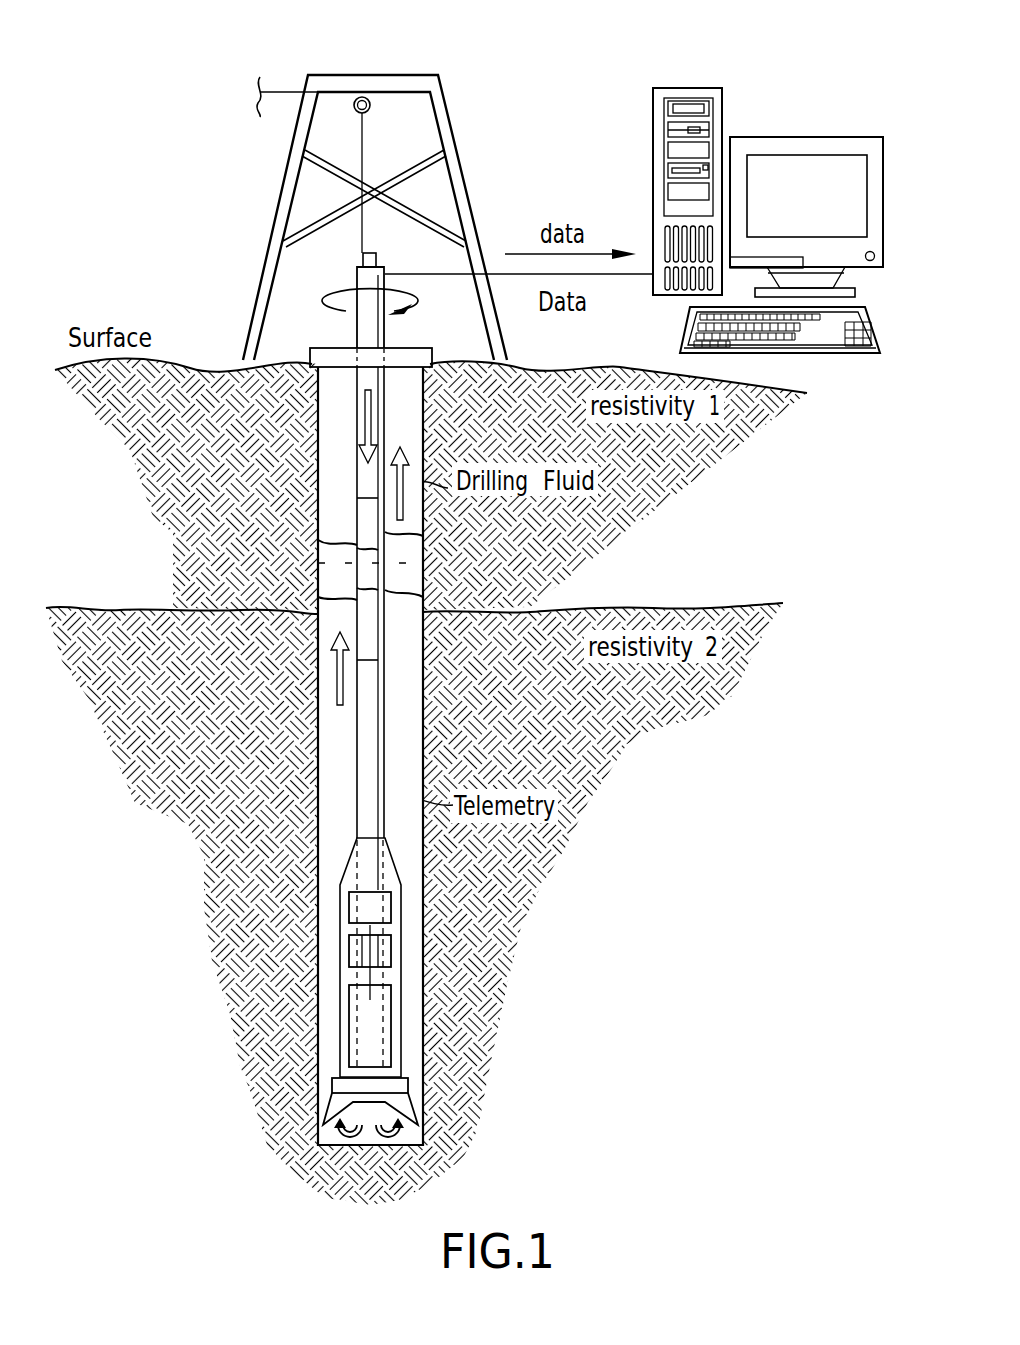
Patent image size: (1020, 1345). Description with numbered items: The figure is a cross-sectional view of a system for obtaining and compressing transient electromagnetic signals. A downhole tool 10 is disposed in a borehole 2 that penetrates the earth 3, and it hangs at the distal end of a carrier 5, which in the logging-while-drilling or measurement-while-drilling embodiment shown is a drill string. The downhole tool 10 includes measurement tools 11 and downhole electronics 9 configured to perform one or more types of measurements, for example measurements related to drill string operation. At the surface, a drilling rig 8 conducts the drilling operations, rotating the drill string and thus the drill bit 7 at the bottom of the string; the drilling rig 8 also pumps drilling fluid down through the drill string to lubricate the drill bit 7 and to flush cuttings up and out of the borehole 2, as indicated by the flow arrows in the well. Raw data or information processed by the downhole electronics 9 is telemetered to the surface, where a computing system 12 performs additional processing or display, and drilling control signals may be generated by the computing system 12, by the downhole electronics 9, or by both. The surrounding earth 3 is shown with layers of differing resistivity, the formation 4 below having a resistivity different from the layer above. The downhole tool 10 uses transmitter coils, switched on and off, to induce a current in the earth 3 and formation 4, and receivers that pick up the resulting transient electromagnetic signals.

The borehole 2 is at (330, 503).
The earth 3 is at (187, 415).
The formation 4 is at (754, 842).
The carrier 5 is at (355, 598).
The drill bit 7 is at (337, 1097).
The drilling rig 8 is at (185, 236).
The downhole electronics 9 is at (348, 908).
The downhole tool 10 is at (330, 936).
The measurement tools 11 is at (392, 1010).
The computing system 12 is at (693, 88).